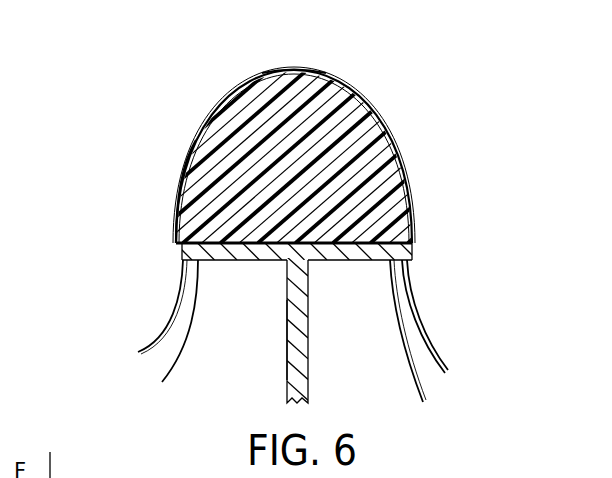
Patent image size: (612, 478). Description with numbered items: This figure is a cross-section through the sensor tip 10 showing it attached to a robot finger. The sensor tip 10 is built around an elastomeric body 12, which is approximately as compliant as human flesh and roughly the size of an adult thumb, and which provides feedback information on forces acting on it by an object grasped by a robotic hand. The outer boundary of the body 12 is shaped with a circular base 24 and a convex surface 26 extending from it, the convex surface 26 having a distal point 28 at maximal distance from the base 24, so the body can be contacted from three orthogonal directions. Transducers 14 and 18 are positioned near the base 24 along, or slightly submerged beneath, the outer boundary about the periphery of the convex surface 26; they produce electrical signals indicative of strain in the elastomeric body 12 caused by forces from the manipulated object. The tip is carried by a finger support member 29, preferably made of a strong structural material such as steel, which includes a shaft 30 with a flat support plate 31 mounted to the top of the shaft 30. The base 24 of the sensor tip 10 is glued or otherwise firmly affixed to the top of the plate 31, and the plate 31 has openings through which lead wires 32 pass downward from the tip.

The sensor tip 10 is at (348, 82).
The elastomeric body 12 is at (363, 102).
The transducer 14 is at (190, 165).
The transducer 18 is at (403, 159).
The circular base 24 is at (178, 248).
The convex surface 26 is at (242, 88).
The distal point 28 is at (293, 71).
The finger support member 29 is at (287, 332).
The shaft 30 is at (308, 328).
The flat support plate 31 is at (253, 262).
The lead wires 32 is at (165, 378).